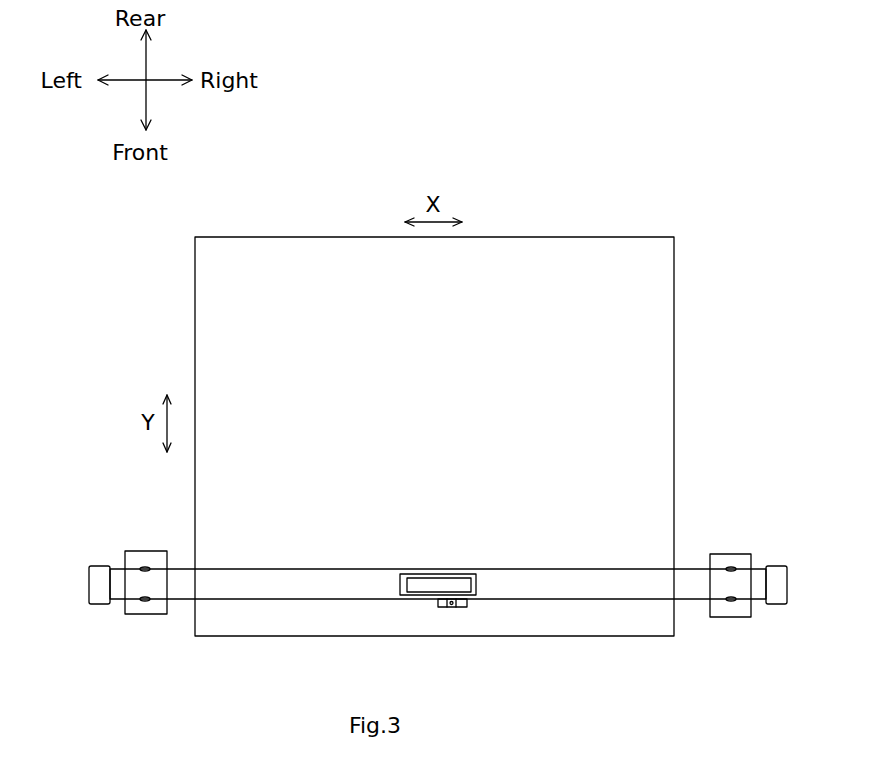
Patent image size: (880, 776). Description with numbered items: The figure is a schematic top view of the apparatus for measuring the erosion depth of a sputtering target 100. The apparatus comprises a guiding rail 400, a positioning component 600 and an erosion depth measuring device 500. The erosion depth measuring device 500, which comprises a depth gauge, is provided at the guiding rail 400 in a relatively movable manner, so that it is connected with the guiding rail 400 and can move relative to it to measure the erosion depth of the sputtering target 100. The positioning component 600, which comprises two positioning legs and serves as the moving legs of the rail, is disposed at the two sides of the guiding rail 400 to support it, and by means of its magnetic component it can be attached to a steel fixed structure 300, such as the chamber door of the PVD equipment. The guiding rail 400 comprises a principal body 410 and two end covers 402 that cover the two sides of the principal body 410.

The sputtering target 100 is at (263, 236).
The fixed structure 300 is at (127, 614).
The guiding rail 400 is at (420, 562).
The end covers 402 is at (88, 583).
The principal body 410 is at (580, 574).
The erosion depth measuring device 500 is at (447, 610).
The positioning component 600 is at (140, 566).